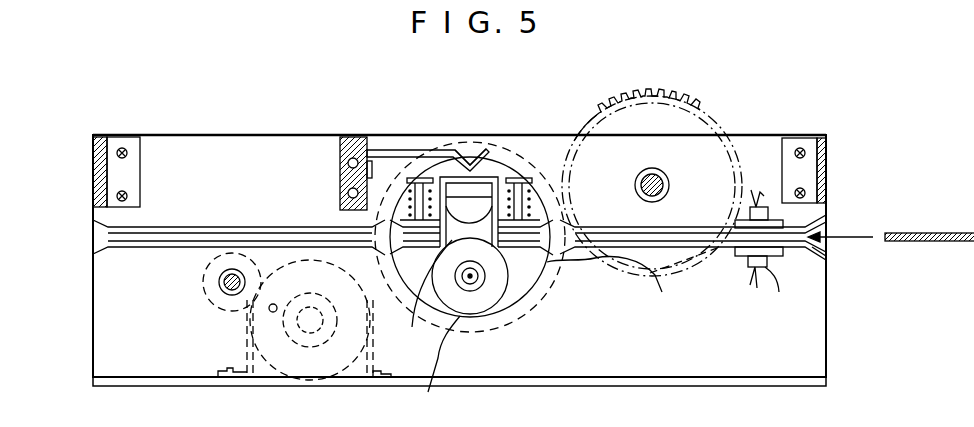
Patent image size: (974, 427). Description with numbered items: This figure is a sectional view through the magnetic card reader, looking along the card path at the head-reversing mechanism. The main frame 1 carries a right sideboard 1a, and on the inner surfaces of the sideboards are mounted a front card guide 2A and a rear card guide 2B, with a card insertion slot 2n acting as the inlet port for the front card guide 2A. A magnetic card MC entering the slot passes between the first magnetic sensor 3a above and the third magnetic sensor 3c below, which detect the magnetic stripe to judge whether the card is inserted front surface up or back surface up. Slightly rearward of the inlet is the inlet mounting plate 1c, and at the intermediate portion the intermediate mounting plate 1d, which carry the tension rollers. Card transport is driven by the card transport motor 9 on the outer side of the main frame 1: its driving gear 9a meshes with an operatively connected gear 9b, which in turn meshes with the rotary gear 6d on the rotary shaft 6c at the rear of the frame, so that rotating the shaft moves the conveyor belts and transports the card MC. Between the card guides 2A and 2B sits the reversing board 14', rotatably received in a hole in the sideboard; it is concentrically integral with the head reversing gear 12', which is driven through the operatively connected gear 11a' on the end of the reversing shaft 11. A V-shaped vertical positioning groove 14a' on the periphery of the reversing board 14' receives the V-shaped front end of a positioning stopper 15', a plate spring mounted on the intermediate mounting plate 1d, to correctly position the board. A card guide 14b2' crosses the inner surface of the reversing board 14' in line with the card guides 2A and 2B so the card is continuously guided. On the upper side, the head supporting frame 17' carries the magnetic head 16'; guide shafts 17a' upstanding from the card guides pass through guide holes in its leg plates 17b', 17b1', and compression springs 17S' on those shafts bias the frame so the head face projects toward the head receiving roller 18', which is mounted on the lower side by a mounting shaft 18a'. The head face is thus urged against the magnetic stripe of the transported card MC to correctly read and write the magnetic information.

The main frame 1 is at (803, 386).
The right sideboard 1a is at (240, 152).
The inlet mounting plate 1c is at (827, 160).
The intermediate mounting plate 1d is at (346, 157).
The front card guide 2A is at (688, 228).
The rear card guide 2B is at (223, 227).
The card insertion slot 2n is at (824, 246).
The first magnetic sensor 3a is at (768, 207).
The third magnetic sensor 3c is at (771, 268).
The rotary shaft 6c is at (218, 278).
The rotary gear 6d is at (192, 316).
The card transport motor 9 is at (300, 300).
The driving gear 9a is at (318, 305).
The operatively connected gear 9b is at (267, 323).
The reversing shaft 11 is at (667, 170).
The operatively connected gear 11a' is at (650, 81).
The head reversing gear 12' is at (508, 244).
The reversing board 14' is at (492, 217).
The vertical positioning groove 14a' is at (431, 368).
The card guide 14b2' is at (341, 154).
The positioning stopper 15' is at (472, 122).
The magnetic head 16' is at (417, 296).
The head supporting frame 17' is at (454, 156).
The guide shaft 17a' is at (467, 117).
The compression spring 17S' is at (480, 142).
The leg plate 17b' is at (604, 284).
The leg plate 17b1' is at (685, 285).
The head receiving roller 18' is at (493, 303).
The mounting shaft 18a' is at (484, 315).
The magnetic card MC is at (921, 233).